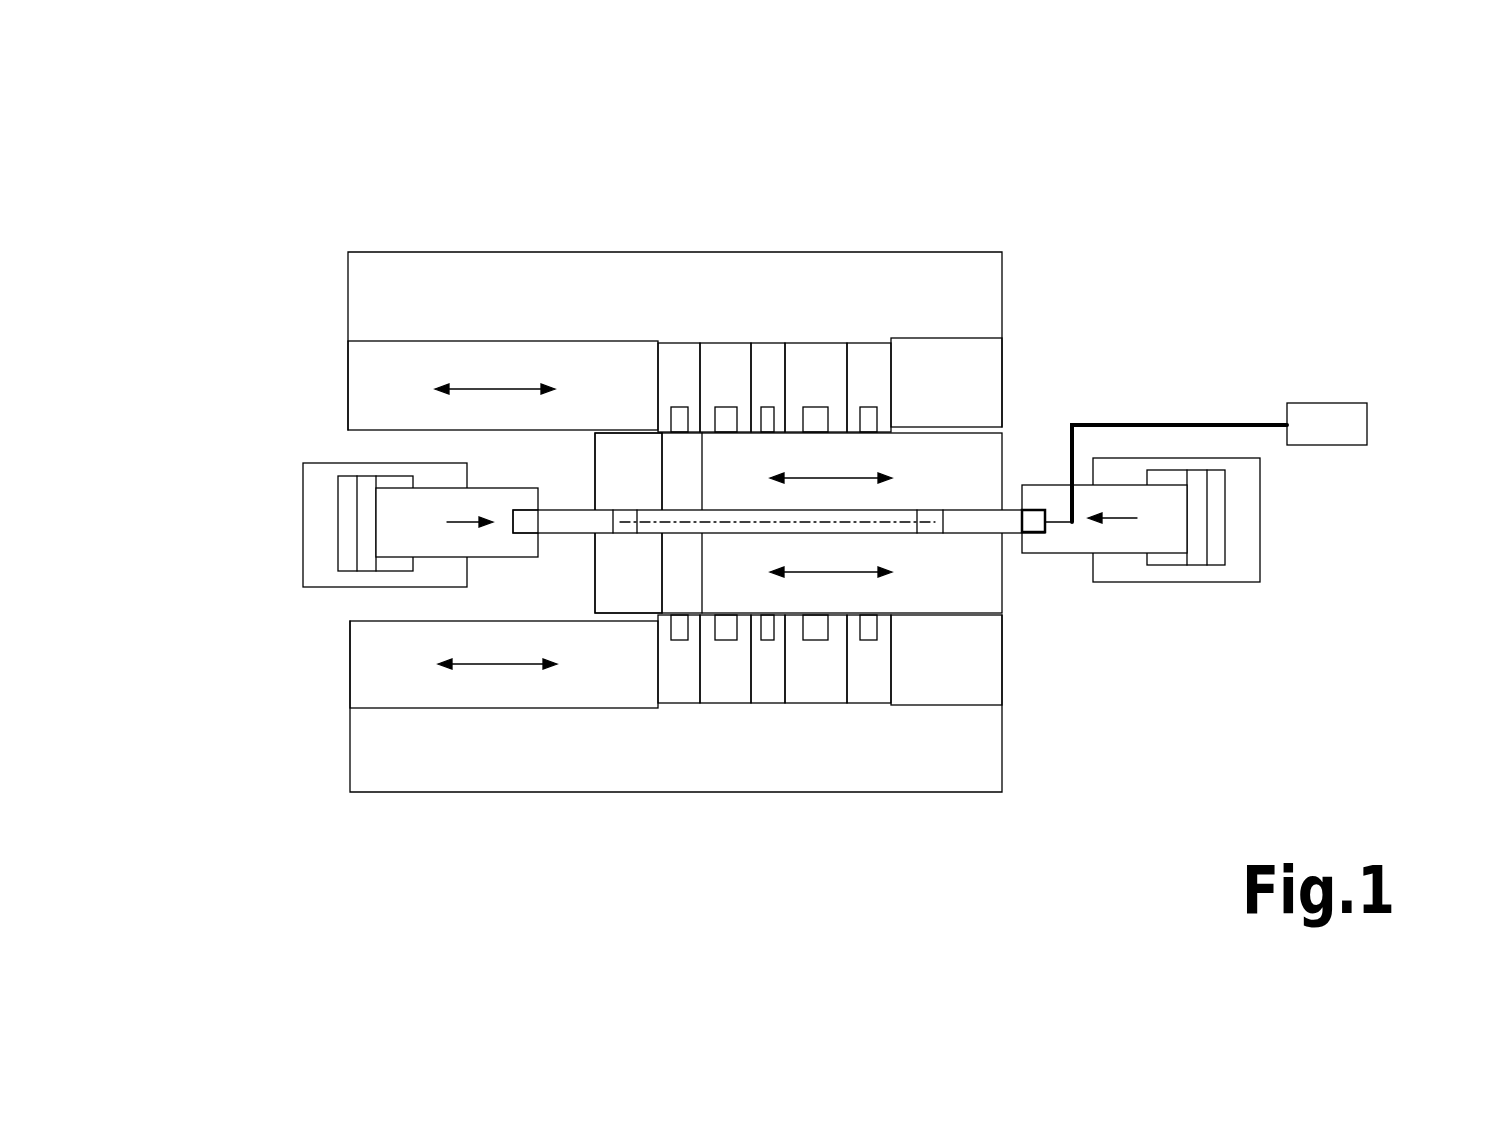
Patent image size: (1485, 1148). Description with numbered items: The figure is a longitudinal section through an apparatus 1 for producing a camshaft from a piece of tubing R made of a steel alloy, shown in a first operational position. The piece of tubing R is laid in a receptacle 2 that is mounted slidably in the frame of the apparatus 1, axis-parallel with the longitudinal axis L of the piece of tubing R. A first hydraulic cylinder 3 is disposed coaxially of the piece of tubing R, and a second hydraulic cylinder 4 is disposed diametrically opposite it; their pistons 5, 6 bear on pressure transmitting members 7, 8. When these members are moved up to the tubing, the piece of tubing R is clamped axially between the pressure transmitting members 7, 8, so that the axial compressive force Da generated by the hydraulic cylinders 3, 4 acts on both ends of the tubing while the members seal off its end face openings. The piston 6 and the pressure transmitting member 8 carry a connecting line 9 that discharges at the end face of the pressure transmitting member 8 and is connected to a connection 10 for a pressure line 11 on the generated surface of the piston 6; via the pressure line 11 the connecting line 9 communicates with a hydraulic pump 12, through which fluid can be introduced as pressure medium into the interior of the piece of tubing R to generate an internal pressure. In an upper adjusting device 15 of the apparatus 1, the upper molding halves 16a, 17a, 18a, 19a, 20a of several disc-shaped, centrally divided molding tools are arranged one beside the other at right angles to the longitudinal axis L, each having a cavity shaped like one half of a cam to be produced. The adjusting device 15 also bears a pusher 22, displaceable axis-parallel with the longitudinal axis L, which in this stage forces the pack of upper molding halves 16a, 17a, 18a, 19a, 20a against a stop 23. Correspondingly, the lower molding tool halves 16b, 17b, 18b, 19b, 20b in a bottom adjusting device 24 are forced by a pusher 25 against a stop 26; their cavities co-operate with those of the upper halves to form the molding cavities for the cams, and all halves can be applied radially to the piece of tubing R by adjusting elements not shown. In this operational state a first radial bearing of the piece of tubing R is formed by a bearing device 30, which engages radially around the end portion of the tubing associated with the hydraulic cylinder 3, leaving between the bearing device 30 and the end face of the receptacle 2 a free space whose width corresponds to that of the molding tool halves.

The apparatus 1 is at (322, 228).
The receptacle 2 is at (963, 479).
The first hydraulic cylinder 3 is at (317, 542).
The second hydraulic cylinder 4 is at (1247, 552).
The piston 5 is at (423, 532).
The piston 6 is at (1148, 532).
The pressure transmitting member 7 is at (557, 522).
The pressure transmitting member 8 is at (1008, 523).
The connecting line 9 is at (1055, 523).
The connection 10 is at (1072, 478).
The pressure line 11 is at (1257, 425).
The hydraulic pump 12 is at (1333, 425).
The upper adjusting device 15 is at (473, 293).
The upper molding half 16a is at (685, 372).
The upper molding half 17a is at (732, 368).
The upper molding half 18a is at (767, 363).
The upper molding half 19a is at (820, 362).
The upper molding half 20a is at (865, 363).
The lower molding tool half 16b is at (682, 690).
The lower molding tool half 17b is at (727, 690).
The lower molding tool half 18b is at (771, 697).
The lower molding tool half 19b is at (823, 682).
The lower molding tool half 20b is at (872, 694).
The pusher 22 is at (413, 362).
The stop 23 is at (930, 358).
The bottom adjusting device 24 is at (955, 765).
The pusher 25 is at (467, 693).
The stop 26 is at (950, 663).
The bearing device 30 is at (628, 592).
The piece of tubing R is at (918, 510).
The longitudinal axis L is at (877, 522).
The axial compressive force Da is at (463, 520).